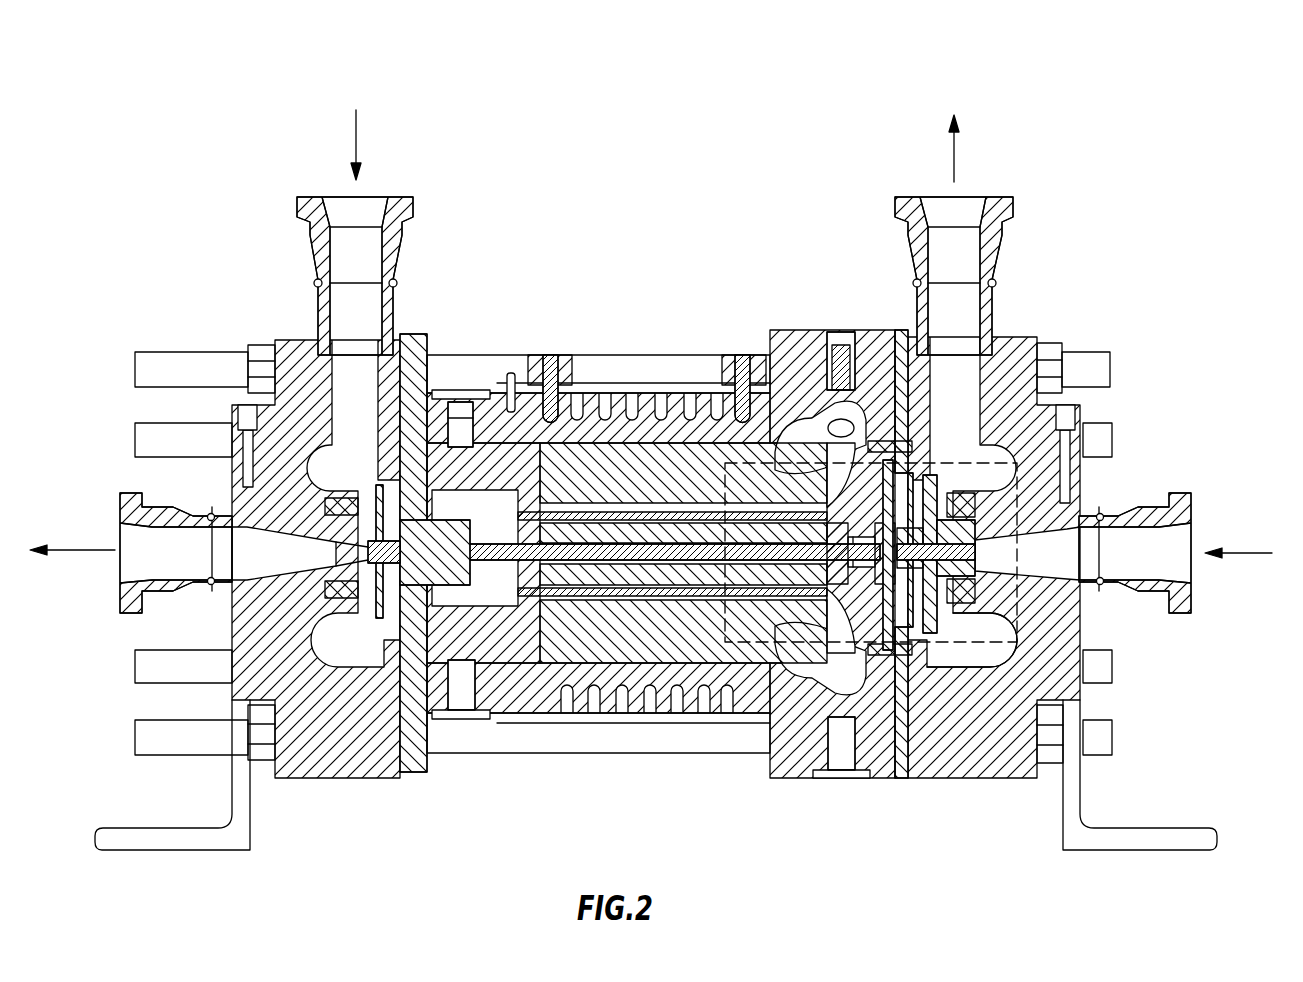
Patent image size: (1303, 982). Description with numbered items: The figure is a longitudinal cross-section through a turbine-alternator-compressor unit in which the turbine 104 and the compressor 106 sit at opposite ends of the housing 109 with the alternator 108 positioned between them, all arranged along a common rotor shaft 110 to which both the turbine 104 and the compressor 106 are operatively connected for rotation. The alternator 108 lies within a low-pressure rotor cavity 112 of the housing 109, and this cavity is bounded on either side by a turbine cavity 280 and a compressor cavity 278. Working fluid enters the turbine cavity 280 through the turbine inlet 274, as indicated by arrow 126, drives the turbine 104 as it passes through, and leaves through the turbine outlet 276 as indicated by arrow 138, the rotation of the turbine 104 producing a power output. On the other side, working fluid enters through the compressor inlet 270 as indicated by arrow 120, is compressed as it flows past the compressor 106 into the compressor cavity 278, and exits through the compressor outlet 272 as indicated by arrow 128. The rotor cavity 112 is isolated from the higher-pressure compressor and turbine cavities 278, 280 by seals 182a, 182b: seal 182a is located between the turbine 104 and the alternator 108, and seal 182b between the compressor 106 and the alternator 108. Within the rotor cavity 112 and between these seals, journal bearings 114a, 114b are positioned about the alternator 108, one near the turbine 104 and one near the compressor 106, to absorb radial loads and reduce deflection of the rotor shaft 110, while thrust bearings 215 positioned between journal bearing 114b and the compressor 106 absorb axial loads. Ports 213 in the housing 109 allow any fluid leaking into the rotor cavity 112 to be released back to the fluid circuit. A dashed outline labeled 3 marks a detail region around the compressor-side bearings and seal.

The detail view section 3 is at (1020, 485).
The turbine 104 is at (368, 546).
The compressor 106 is at (967, 517).
The alternator 108 is at (674, 495).
The housing 109 is at (1075, 693).
The rotor shaft 110 is at (653, 553).
The rotor cavity 112 is at (636, 495).
The journal bearing 114a is at (433, 705).
The journal bearing 114b is at (840, 600).
The arrow 120 is at (1237, 553).
The arrow 126 is at (356, 143).
The arrow 128 is at (955, 148).
The arrow 138 is at (80, 550).
The seal 182a is at (377, 590).
The seal 182b is at (880, 650).
The ports 213 is at (462, 405).
The thrust bearings 215 is at (848, 600).
The compressor inlet 270 is at (1193, 577).
The compressor outlet 272 is at (980, 203).
The turbine inlet 274 is at (380, 205).
The turbine outlet 276 is at (120, 575).
The compressor cavity 278 is at (959, 668).
The turbine cavity 280 is at (349, 675).